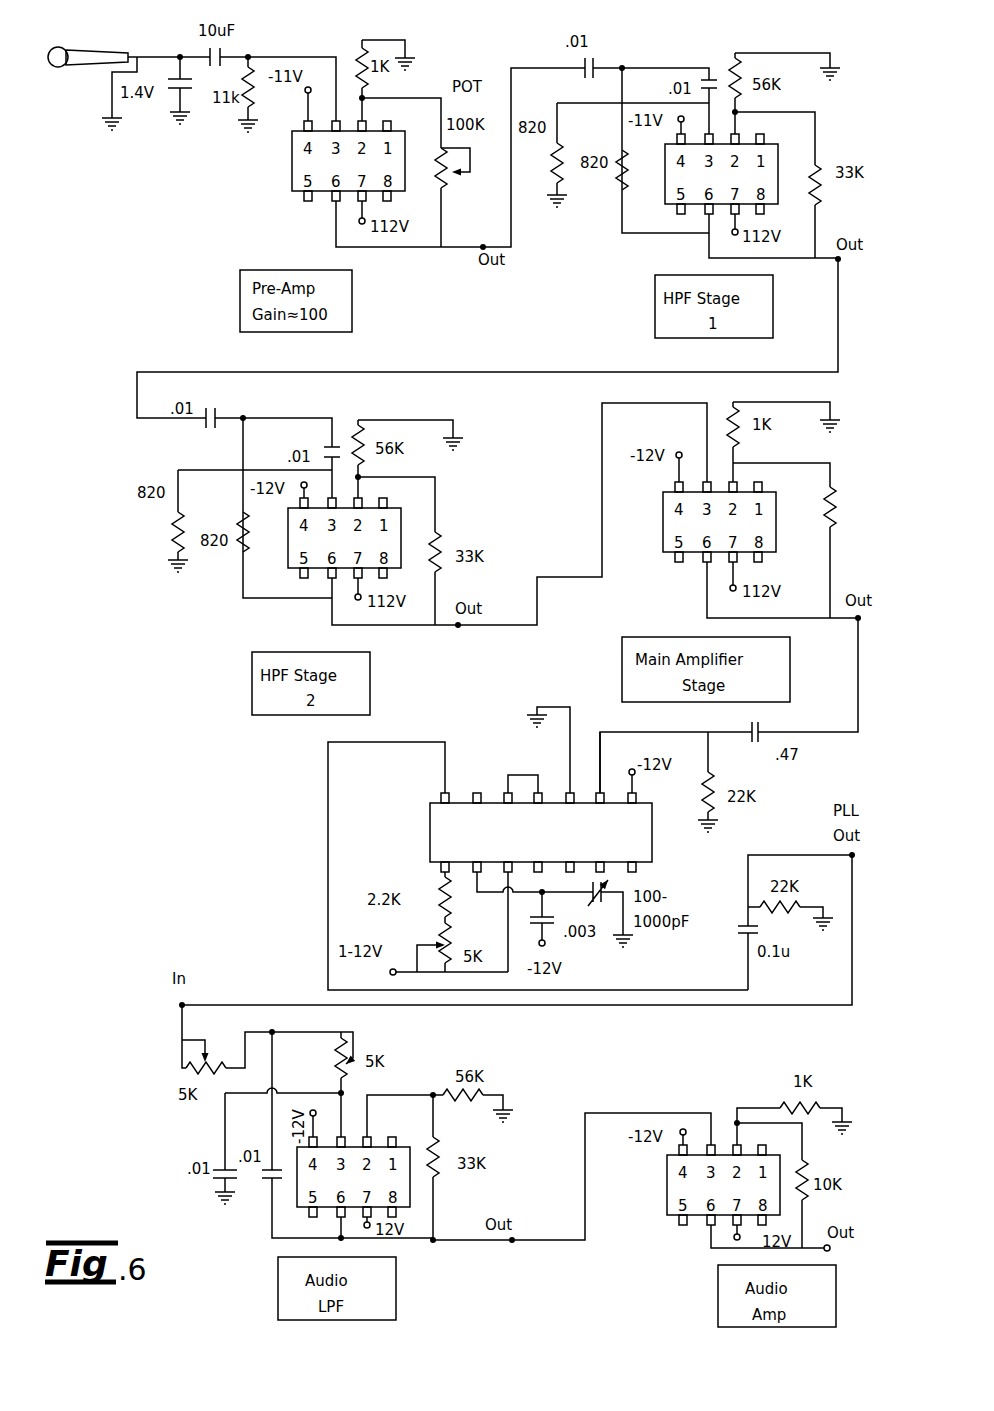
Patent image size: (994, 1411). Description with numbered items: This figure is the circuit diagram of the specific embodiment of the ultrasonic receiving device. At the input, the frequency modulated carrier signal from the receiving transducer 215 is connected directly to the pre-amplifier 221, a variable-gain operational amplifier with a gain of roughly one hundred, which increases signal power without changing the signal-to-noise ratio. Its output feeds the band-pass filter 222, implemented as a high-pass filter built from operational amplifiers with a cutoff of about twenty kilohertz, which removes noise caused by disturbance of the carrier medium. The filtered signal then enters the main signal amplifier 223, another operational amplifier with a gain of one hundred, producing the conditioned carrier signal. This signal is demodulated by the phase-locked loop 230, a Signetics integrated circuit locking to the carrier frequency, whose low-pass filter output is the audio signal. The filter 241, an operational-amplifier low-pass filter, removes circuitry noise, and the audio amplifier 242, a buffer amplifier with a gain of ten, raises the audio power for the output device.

The receiving transducer 215 is at (80, 48).
The pre-amplifier 221 is at (292, 168).
The band-pass filter 222 is at (665, 200).
The main signal amplifier 223 is at (663, 540).
The phase-locked loop 230 is at (430, 838).
The filter 241 is at (297, 1197).
The audio amplifier 242 is at (667, 1185).